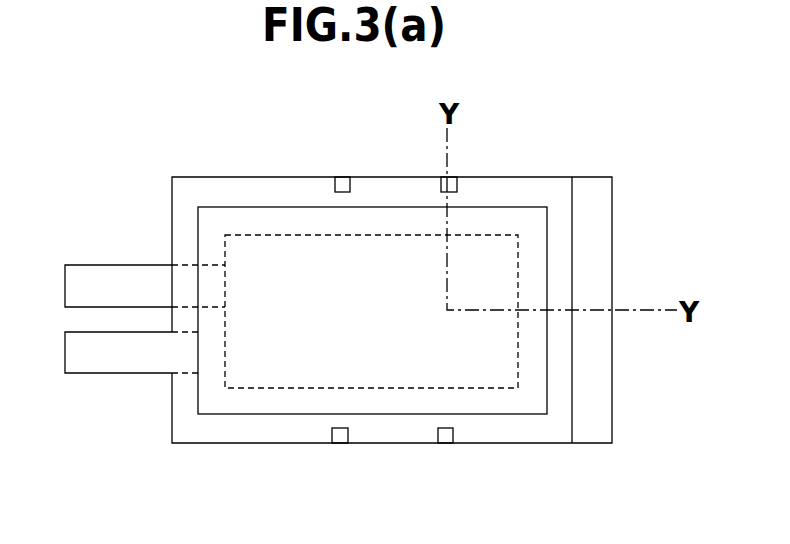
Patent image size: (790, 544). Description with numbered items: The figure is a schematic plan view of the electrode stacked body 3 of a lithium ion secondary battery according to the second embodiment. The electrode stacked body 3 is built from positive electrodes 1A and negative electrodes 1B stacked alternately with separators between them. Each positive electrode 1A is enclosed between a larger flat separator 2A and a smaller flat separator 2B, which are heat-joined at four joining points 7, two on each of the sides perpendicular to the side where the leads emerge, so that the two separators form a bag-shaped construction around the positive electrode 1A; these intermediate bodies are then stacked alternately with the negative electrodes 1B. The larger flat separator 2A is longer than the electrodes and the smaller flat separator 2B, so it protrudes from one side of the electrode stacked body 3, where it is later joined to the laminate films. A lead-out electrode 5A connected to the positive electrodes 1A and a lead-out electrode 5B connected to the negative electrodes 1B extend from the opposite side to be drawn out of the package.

The electrode stacked body 3 is at (204, 152).
The positive electrode 1A is at (278, 368).
The negative electrode 1B is at (285, 219).
The larger flat separator 2A is at (587, 192).
The smaller flat separator 2B is at (498, 190).
The lead-out electrode 5A is at (101, 277).
The lead-out electrode 5B is at (106, 358).
The joining point 7 is at (444, 186).